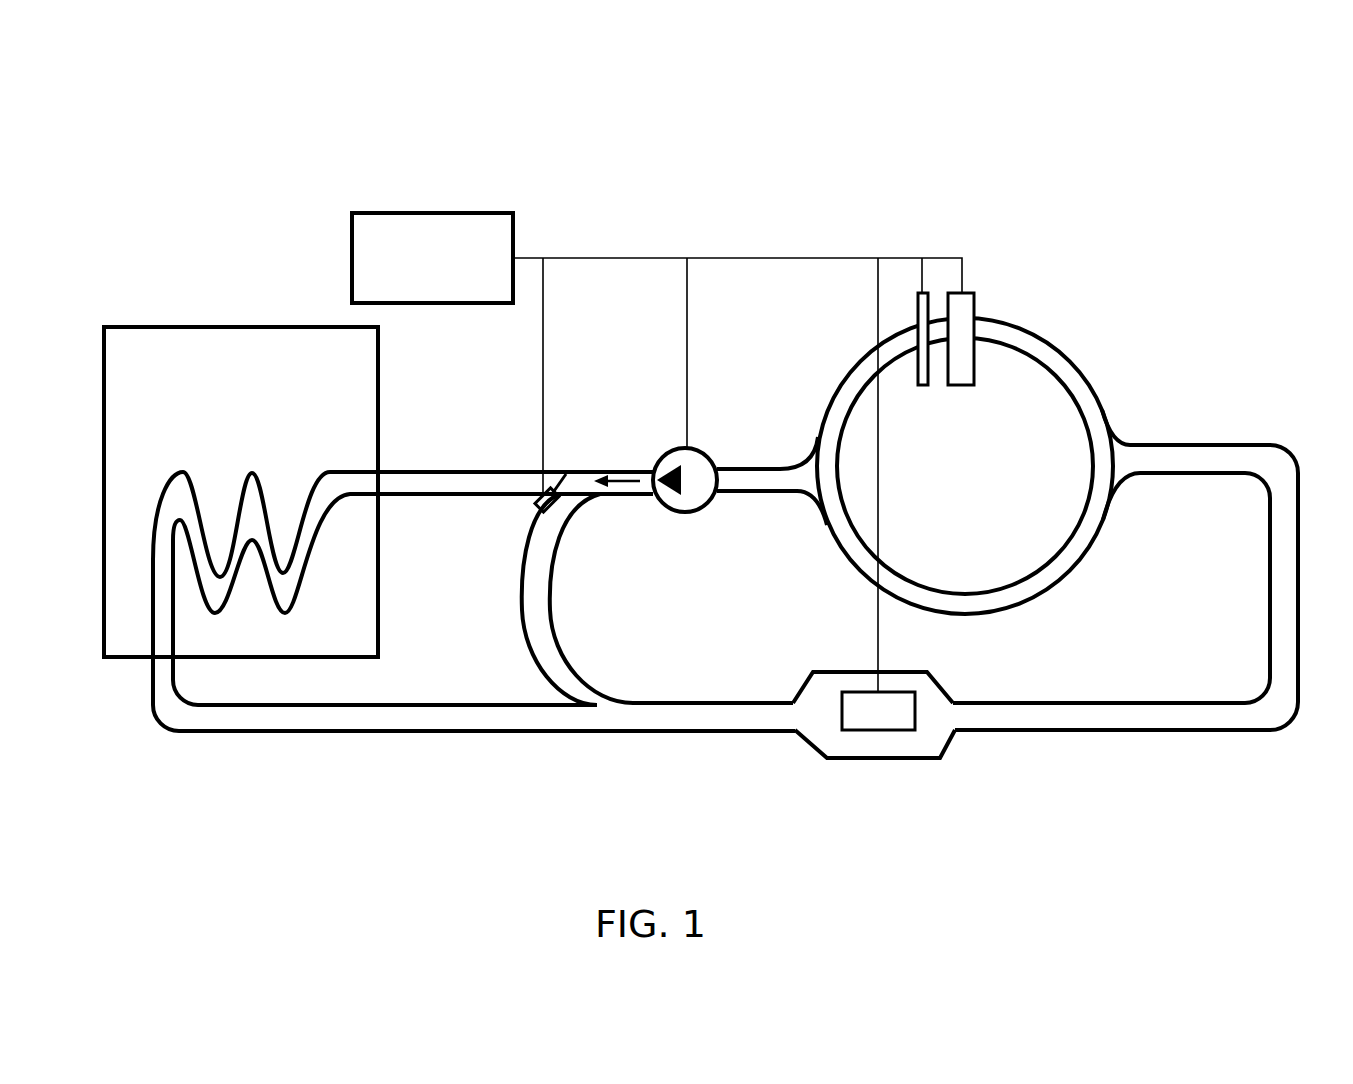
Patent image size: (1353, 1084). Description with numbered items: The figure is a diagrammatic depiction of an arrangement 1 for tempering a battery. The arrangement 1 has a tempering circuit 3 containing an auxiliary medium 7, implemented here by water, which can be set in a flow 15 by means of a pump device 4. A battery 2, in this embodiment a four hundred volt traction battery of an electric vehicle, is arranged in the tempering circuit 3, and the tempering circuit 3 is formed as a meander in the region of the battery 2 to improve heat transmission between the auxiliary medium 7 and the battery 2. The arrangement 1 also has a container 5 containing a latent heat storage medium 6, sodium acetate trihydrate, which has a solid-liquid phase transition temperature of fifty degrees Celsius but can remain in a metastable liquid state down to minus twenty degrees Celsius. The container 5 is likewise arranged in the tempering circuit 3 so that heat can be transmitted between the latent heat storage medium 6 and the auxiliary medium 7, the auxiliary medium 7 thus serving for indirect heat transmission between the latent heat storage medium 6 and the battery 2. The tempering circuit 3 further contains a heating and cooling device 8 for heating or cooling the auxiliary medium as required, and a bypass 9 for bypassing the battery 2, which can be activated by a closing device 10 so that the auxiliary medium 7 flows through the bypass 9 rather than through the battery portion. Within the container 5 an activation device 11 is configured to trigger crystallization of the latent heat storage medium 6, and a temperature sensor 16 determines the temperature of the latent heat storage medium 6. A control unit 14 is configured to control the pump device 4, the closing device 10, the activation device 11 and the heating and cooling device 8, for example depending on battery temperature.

The arrangement 1 is at (197, 127).
The battery 2 is at (226, 412).
The tempering circuit 3 is at (765, 465).
The pump device 4 is at (687, 513).
The container 5 is at (1052, 377).
The latent heat storage medium 6 is at (954, 485).
The auxiliary medium 7 is at (612, 718).
The heating and cooling device 8 is at (877, 730).
The bypass 9 is at (535, 600).
The closing device 10 is at (535, 500).
The activation device 11 is at (960, 330).
The control unit 14 is at (416, 280).
The flow 15 is at (623, 486).
The temperature sensor 16 is at (925, 330).